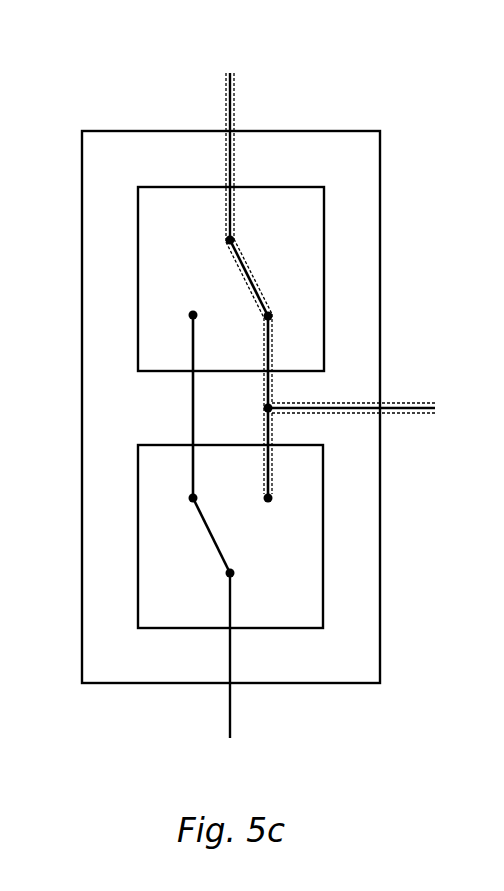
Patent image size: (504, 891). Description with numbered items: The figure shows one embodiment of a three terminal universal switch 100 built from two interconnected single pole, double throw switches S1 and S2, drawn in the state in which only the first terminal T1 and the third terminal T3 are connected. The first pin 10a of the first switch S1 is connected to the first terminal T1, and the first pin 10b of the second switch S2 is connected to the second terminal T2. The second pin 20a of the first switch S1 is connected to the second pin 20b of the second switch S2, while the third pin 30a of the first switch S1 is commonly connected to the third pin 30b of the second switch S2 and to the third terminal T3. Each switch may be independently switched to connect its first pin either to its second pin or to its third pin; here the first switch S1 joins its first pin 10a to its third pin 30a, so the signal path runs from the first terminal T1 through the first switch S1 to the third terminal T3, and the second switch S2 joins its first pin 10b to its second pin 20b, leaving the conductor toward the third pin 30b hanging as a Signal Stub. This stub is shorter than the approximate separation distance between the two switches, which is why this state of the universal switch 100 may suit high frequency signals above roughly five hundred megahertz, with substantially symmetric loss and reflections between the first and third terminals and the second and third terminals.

The universal switch 100 is at (114, 90).
The first pin of the first switch 10a is at (226, 156).
The first pin of the second switch 10b is at (228, 653).
The second pin of the first switch 20a is at (190, 387).
The second pin of the second switch 20b is at (190, 424).
The third pin of the first switch 30a is at (272, 383).
The third pin of the second switch 30b is at (272, 427).
The first switch S1 is at (231, 279).
The second switch S2 is at (230, 536).
The first terminal T1 is at (229, 87).
The second terminal T2 is at (228, 725).
The third terminal T3 is at (365, 408).
The signal stub Stub is at (272, 470).